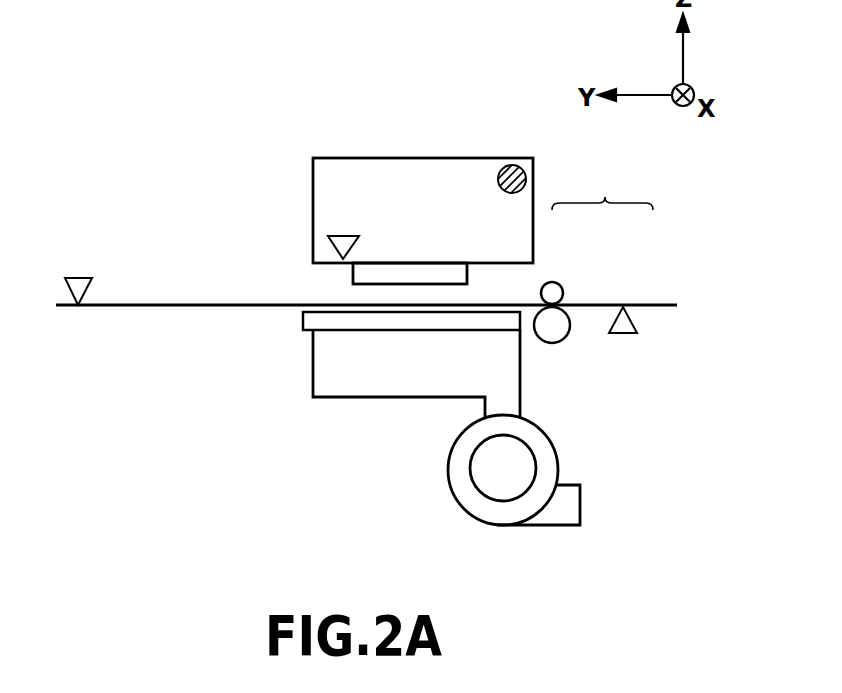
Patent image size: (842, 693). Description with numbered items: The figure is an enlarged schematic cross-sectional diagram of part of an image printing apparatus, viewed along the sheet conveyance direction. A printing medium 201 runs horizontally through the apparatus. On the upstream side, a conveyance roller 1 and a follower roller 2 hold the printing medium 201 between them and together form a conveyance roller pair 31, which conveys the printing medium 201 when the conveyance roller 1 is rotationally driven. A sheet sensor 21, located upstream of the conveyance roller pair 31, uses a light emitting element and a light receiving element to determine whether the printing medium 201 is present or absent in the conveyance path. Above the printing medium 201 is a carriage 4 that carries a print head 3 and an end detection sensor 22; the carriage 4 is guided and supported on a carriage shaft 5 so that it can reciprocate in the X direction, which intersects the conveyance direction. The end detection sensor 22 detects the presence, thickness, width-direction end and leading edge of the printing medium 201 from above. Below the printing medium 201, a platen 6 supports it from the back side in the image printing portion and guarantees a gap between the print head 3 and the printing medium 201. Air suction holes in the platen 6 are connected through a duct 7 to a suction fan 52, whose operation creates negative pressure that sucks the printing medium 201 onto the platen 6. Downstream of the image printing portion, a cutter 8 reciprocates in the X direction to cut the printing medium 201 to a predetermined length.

The conveyance roller 1 is at (563, 324).
The follower roller 2 is at (548, 289).
The print head 3 is at (400, 277).
The carriage 4 is at (325, 169).
The carriage shaft 5 is at (510, 171).
The platen 6 is at (343, 319).
The duct 7 is at (406, 380).
The cutter 8 is at (77, 291).
The sheet sensor 21 is at (627, 329).
The end detection sensor 22 is at (340, 240).
The conveyance roller pair 31 is at (602, 186).
The suction fan 52 is at (502, 482).
The printing medium 201 is at (147, 306).